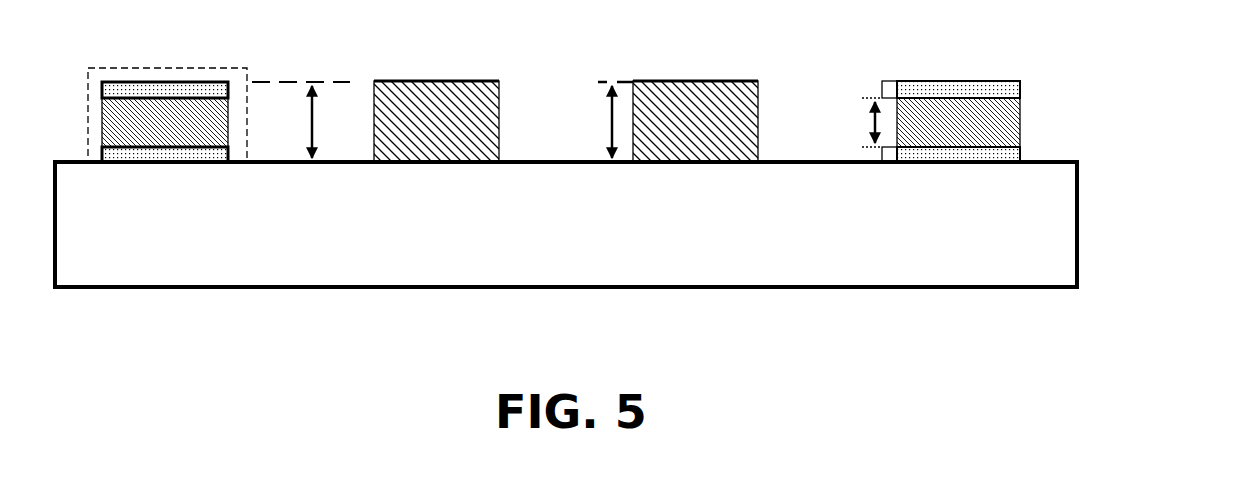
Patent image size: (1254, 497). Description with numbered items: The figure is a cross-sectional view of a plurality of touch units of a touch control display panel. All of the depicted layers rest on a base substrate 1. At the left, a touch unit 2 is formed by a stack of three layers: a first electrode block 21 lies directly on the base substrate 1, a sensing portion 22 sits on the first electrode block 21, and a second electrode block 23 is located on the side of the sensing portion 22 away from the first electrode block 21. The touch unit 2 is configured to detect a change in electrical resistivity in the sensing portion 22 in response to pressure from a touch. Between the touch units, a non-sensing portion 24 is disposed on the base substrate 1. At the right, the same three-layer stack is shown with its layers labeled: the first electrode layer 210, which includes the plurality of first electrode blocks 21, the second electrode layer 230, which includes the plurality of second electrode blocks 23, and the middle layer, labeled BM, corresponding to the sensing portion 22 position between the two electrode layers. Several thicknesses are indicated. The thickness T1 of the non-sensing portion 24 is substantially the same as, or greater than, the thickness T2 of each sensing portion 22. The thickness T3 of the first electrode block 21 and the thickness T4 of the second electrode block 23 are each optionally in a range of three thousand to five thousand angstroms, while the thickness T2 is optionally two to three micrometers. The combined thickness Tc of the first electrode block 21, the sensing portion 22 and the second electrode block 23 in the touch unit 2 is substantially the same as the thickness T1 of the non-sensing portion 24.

The base substrate 1 is at (930, 289).
The touch unit 2 is at (172, 83).
The first electrode block 21 is at (112, 157).
The sensing portion 22 is at (185, 128).
The second electrode block 23 is at (137, 91).
The non-sensing portion 24 is at (467, 142).
The first electrode layer 210 is at (1005, 155).
The second electrode layer 230 is at (1005, 89).
The black matrix layer BM is at (1005, 122).
The thickness of the non-sensing portion T1 is at (597, 120).
The thickness of the sensing portion T2 is at (854, 122).
The thickness of the first electrode block T3 is at (882, 152).
The thickness of the second electrode block T4 is at (882, 90).
The combined thickness Tc is at (304, 120).